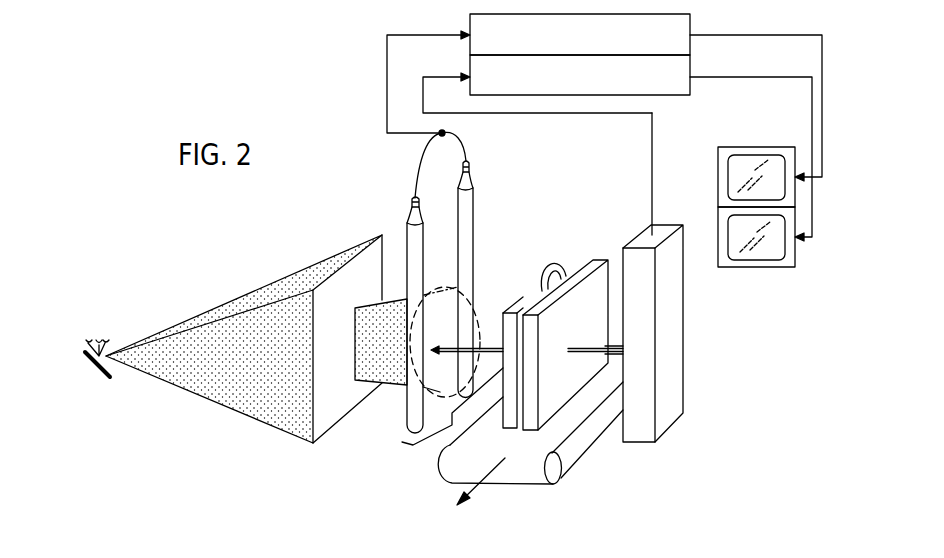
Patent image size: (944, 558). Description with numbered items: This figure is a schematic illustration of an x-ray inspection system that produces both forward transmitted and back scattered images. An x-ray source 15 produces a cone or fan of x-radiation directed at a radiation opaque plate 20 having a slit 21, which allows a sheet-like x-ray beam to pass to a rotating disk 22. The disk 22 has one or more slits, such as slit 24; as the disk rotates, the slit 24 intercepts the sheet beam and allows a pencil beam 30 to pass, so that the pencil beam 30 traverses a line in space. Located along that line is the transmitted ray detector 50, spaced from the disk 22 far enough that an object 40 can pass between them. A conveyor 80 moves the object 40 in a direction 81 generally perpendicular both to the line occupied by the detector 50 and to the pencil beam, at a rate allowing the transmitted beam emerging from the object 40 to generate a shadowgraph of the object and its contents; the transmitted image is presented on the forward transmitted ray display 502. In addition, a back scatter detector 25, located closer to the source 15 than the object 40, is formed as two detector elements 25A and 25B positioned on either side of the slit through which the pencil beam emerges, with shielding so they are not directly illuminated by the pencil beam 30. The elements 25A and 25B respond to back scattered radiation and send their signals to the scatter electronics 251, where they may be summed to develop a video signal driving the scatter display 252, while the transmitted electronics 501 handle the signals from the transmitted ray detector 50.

The x-ray source 15 is at (136, 393).
The radiation opaque plate 20 is at (363, 294).
The slit 21 is at (355, 345).
The rotating disk 22 is at (460, 289).
The slit 24 is at (432, 348).
The back scatter detector 25 is at (453, 424).
The detector element 25A is at (474, 210).
The detector element 25B is at (406, 226).
The pencil beam 30 is at (490, 340).
The object 40 is at (592, 240).
The transmitted ray detector 50 is at (677, 332).
The conveyor 80 is at (448, 458).
The direction 81 is at (475, 496).
The scatter electronics 251 is at (642, 15).
The transmitted electronics 501 is at (669, 101).
The forward transmitted ray display 502 is at (718, 167).
The scatter imaging device or display 252 is at (782, 270).